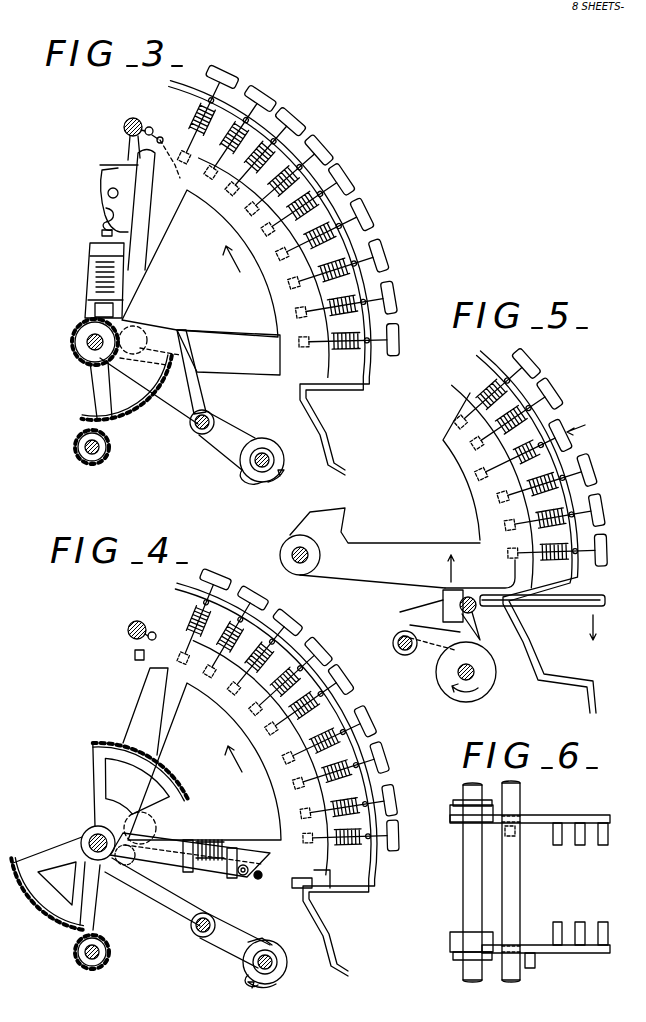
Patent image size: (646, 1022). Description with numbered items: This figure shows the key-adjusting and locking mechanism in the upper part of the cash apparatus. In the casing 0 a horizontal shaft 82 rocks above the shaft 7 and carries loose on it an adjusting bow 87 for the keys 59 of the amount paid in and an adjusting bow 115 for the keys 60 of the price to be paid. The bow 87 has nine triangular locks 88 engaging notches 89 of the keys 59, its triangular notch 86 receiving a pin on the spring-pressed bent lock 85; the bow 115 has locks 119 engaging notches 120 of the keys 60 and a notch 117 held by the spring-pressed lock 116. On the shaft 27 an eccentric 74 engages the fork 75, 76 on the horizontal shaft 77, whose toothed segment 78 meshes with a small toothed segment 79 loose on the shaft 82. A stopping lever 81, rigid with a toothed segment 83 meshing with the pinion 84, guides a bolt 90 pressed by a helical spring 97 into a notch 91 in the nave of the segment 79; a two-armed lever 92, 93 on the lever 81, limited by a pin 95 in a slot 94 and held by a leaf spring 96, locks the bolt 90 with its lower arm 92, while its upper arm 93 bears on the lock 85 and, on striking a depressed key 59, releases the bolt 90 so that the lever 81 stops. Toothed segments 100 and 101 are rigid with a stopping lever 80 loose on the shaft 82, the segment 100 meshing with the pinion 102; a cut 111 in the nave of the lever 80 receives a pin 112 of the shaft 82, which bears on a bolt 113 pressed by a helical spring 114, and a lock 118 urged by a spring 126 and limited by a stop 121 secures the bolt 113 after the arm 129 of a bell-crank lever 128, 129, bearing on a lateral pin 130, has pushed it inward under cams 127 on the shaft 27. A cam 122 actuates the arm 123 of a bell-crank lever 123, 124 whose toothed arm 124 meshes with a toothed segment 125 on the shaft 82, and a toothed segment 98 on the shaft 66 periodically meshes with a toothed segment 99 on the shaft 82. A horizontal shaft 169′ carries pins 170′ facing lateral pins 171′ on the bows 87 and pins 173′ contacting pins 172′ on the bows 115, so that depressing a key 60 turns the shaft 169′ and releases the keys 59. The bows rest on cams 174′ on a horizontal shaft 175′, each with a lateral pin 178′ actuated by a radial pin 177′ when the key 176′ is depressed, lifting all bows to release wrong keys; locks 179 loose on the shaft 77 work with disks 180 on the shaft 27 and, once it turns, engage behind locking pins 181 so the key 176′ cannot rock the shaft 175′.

In FIG. 3, the casing 0 is at (375, 248).
In FIG. 4, the casing 0 is at (375, 748).
In FIG. 5, the casing 0 is at (595, 498).
In FIG. 3, the shaft 7 is at (84, 446).
In FIG. 4, the shaft 7 is at (84, 952).
In FIG. 3, the shaft 27 is at (274, 462).
In FIG. 4, the shaft 27 is at (276, 970).
In FIG. 5, the shaft 27 is at (476, 674).
In FIG. 3, the keys for the amount paid in 59 is at (330, 160).
In FIG. 5, the keys for the amount paid in 59 is at (545, 405).
In FIG. 4, the keys for the price to be paid 60 is at (295, 642).
In FIG. 4, the shaft 66 is at (170, 815).
In FIG. 3, the eccentric 74 is at (260, 482).
In FIG. 3, the fork 75 is at (228, 473).
In FIG. 3, the fork 76 is at (245, 428).
In FIG. 3, the horizontal shaft 77 is at (200, 432).
In FIG. 4, the horizontal shaft 77 is at (200, 938).
In FIG. 5, the horizontal shaft 77 is at (402, 630).
In FIG. 3, the toothed segment 78 is at (200, 392).
In FIG. 3, the small toothed segment 79 is at (136, 328).
In FIG. 4, the stopping lever 80 is at (166, 935).
In FIG. 3, the stopping lever 81 is at (88, 260).
In FIG. 3, the horizontal shaft 82 is at (78, 352).
In FIG. 4, the horizontal shaft 82 is at (88, 832).
In FIG. 5, the horizontal shaft 82 is at (292, 554).
In FIG. 6, the horizontal shaft 82 is at (468, 880).
In FIG. 3, the toothed segment 83 is at (95, 416).
In FIG. 3, the pinion 84 is at (80, 458).
In FIG. 3, the spring-pressed bent lock 85 is at (170, 95).
In FIG. 3, the triangular notch 86 is at (172, 165).
In FIG. 3, the adjusting bow 87 is at (236, 271).
In FIG. 5, the adjusting bow 87 is at (480, 515).
In FIG. 6, the adjusting bow 87 is at (590, 950).
In FIG. 3, the lock 88 is at (290, 302).
In FIG. 5, the lock 88 is at (480, 472).
In FIG. 6, the lock 88 is at (601, 922).
In FIG. 3, the notch 89 is at (240, 200).
In FIG. 5, the notch 89 is at (455, 445).
In FIG. 3, the bolt 90 is at (87, 305).
In FIG. 3, the notch 91 is at (88, 318).
In FIG. 3, the lower arm 92 is at (162, 225).
In FIG. 3, the upper arm 93 is at (110, 168).
In FIG. 3, the slot 94 is at (100, 235).
In FIG. 3, the pin 95 is at (100, 214).
In FIG. 3, the leaf spring 96 is at (105, 190).
In FIG. 3, the helical spring 97 is at (95, 286).
In FIG. 4, the toothed segment 98 is at (150, 835).
In FIG. 4, the toothed segment 99 is at (85, 880).
In FIG. 4, the toothed segment 100 is at (40, 920).
In FIG. 4, the toothed segment 101 is at (162, 778).
In FIG. 4, the pinion 102 is at (90, 968).
In FIG. 4, the cut 111 is at (122, 808).
In FIG. 4, the pin 112 is at (172, 798).
In FIG. 4, the bolt 113 is at (215, 840).
In FIG. 4, the helical spring 114 is at (240, 848).
In FIG. 4, the adjusting bow 115 is at (290, 790).
In FIG. 6, the adjusting bow 115 is at (575, 819).
In FIG. 4, the spring-pressed lock 116 is at (363, 878).
In FIG. 4, the notch 117 is at (322, 884).
In FIG. 4, the lock 118 is at (300, 890).
In FIG. 4, the lock 119 is at (221, 746).
In FIG. 6, the lock 119 is at (602, 835).
In FIG. 4, the notch 120 is at (200, 690).
In FIG. 4, the stop 121 is at (310, 900).
In FIG. 4, the cam 122 is at (250, 978).
In FIG. 4, the arm 123 is at (230, 935).
In FIG. 4, the arm 124 is at (156, 900).
In FIG. 4, the toothed segment 125 is at (116, 882).
In FIG. 4, the spring 126 is at (262, 880).
In FIG. 4, the cam 127 is at (287, 962).
In FIG. 4, the lower arm 128 is at (274, 940).
In FIG. 4, the arm 129 is at (240, 918).
In FIG. 4, the lateral pin 130 is at (250, 850).
In FIG. 3, the horizontal shaft 169′ is at (124, 123).
In FIG. 4, the horizontal shaft 169′ is at (132, 622).
In FIG. 6, the horizontal shaft 169′ is at (512, 888).
In FIG. 3, the pin 170′ is at (148, 125).
In FIG. 6, the pin 170′ is at (522, 970).
In FIG. 3, the lateral pin 171′ is at (160, 136).
In FIG. 6, the lateral pin 171′ is at (535, 958).
In FIG. 4, the pin 172′ is at (135, 660).
In FIG. 6, the pin 172′ is at (515, 835).
In FIG. 4, the pin 173′ is at (140, 650).
In FIG. 6, the pin 173′ is at (512, 816).
In FIG. 5, the cam 174′ is at (435, 595).
In FIG. 5, the horizontal shaft 175′ is at (455, 543).
In FIG. 5, the key 176′ is at (600, 598).
In FIG. 5, the radial pin 177′ is at (470, 598).
In FIG. 5, the lateral pin 178′ is at (505, 612).
In FIG. 5, the lock 179 is at (433, 658).
In FIG. 5, the disk 180 is at (448, 688).
In FIG. 5, the locking pin 181 is at (480, 628).